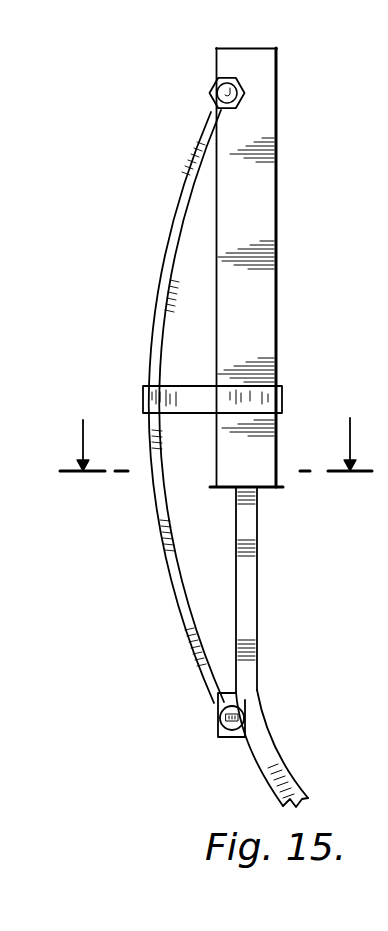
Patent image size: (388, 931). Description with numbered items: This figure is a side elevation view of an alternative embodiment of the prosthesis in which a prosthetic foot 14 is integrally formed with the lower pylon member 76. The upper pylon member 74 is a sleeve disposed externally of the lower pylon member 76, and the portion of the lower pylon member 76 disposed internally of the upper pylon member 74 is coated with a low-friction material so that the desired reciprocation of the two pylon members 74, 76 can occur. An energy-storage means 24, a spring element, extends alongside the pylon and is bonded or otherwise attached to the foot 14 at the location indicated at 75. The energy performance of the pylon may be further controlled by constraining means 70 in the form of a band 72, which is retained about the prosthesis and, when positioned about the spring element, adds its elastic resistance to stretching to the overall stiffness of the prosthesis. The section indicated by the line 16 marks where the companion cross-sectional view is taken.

The prosthetic foot 14 is at (290, 756).
The section line 16- 16 is at (216, 430).
The energy-storage means 24 is at (171, 230).
The constraining means 70 is at (211, 374).
The band 72 is at (268, 397).
The upper pylon member 74 is at (277, 216).
The attachment location 75 is at (237, 740).
The lower pylon member 76 is at (257, 548).